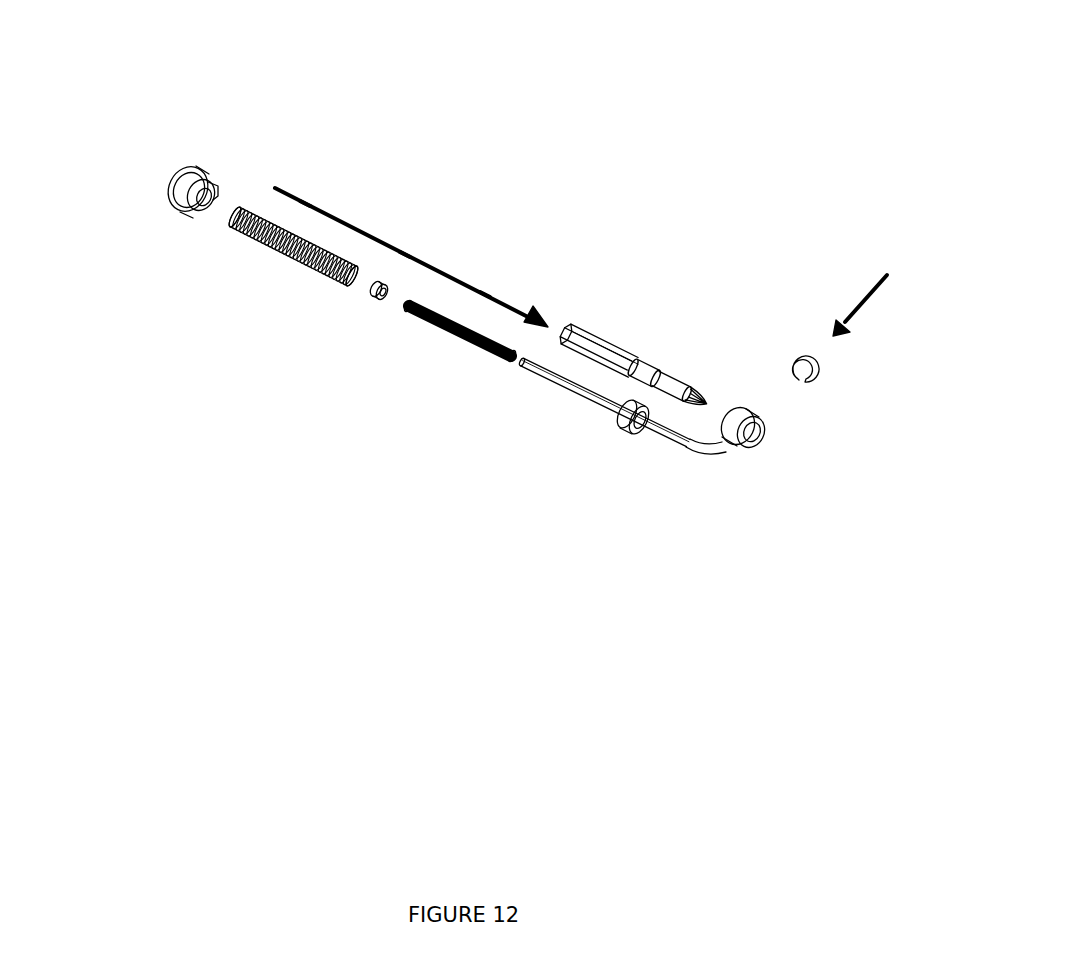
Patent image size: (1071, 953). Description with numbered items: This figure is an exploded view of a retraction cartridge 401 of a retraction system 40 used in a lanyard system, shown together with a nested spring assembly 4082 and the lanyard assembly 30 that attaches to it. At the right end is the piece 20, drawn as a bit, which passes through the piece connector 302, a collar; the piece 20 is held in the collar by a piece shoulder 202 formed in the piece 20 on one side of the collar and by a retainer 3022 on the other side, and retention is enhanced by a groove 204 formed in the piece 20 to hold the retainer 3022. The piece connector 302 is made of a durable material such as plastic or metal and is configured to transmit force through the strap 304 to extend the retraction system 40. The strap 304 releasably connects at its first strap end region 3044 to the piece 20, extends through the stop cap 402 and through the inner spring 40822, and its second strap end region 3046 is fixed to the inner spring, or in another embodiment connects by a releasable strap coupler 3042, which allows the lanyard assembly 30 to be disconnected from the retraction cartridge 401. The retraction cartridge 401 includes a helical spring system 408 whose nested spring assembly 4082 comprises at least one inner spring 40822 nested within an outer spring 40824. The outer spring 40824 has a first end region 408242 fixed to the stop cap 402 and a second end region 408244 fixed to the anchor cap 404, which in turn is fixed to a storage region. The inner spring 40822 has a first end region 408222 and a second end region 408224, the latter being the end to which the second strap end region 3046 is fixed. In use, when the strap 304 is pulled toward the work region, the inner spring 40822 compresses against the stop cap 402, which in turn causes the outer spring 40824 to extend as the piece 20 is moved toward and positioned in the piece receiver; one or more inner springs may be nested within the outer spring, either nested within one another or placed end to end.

The piece 20 is at (605, 347).
The piece shoulder 202 is at (638, 273).
The groove 204 is at (720, 275).
The lanyard assembly 30 is at (575, 420).
The piece connector 302 is at (742, 418).
The retainer 3022 is at (822, 366).
The strap 304 is at (670, 437).
The strap coupler 3042 is at (367, 297).
The first strap end region 3044 is at (722, 447).
The second strap end region 3046 is at (522, 366).
The retraction system 40 is at (470, 200).
The retraction cartridge 401 is at (378, 183).
The stop cap 402 is at (622, 422).
The anchor cap 404 is at (185, 200).
The helical spring system 408 is at (423, 228).
The nested spring assembly 4082 is at (485, 250).
The inner spring 40822 is at (452, 345).
The first end region of the inner spring 408222 is at (508, 360).
The second end region of the inner spring 408224 is at (410, 310).
The outer spring 40824 is at (295, 247).
The first end region of the outer spring 408242 is at (355, 275).
The second end region of the outer spring 408244 is at (230, 217).